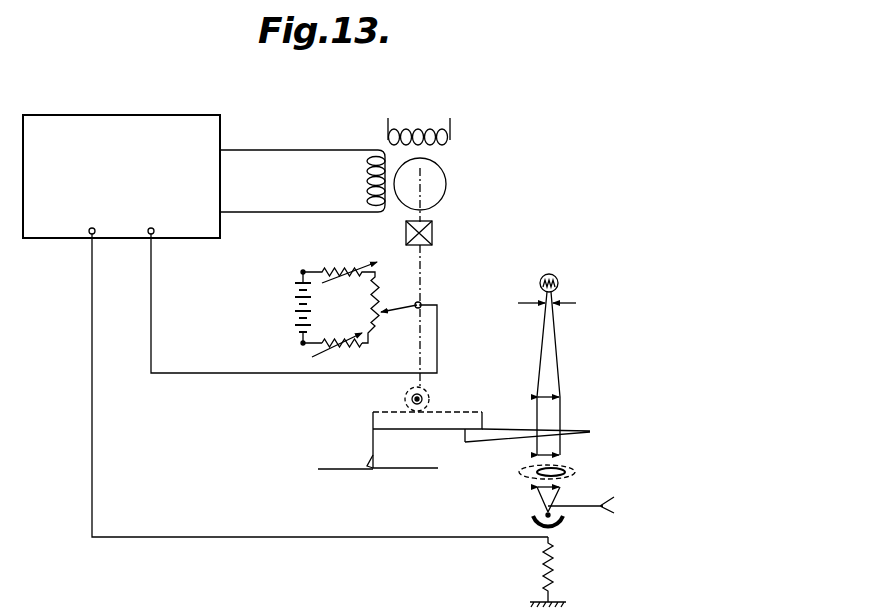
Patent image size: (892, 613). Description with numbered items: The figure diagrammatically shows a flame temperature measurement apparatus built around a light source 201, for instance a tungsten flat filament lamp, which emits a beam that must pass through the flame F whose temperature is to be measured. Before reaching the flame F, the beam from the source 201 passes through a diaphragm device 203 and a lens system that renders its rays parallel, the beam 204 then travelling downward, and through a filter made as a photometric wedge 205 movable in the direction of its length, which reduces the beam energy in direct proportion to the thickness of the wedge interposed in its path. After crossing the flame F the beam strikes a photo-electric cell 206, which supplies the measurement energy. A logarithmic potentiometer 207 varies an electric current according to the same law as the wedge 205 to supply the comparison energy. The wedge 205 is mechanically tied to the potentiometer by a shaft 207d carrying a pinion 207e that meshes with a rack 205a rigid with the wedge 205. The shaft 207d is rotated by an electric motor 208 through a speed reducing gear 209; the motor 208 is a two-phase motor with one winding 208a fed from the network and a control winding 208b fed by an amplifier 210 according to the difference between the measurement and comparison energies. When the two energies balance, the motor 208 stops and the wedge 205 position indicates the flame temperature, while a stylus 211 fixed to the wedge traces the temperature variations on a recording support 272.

The source 201 is at (564, 264).
The diaphragm device 203 is at (555, 294).
The light beam 204 is at (561, 396).
The photometric wedge 205 is at (493, 437).
The rack 205a is at (472, 423).
The photo-electric cell 206 is at (564, 518).
The logarithmic potentiometer 207 is at (349, 309).
The shaft 207d is at (421, 304).
The pinion 207e is at (429, 399).
The electric motor 208 is at (434, 183).
The winding 208a is at (440, 127).
The control winding 208b is at (366, 183).
The speed reducing gear 209 is at (433, 233).
The amplifier 210 is at (121, 176).
The stylus 211 is at (373, 446).
The support 272 is at (360, 470).
The flame F is at (560, 470).